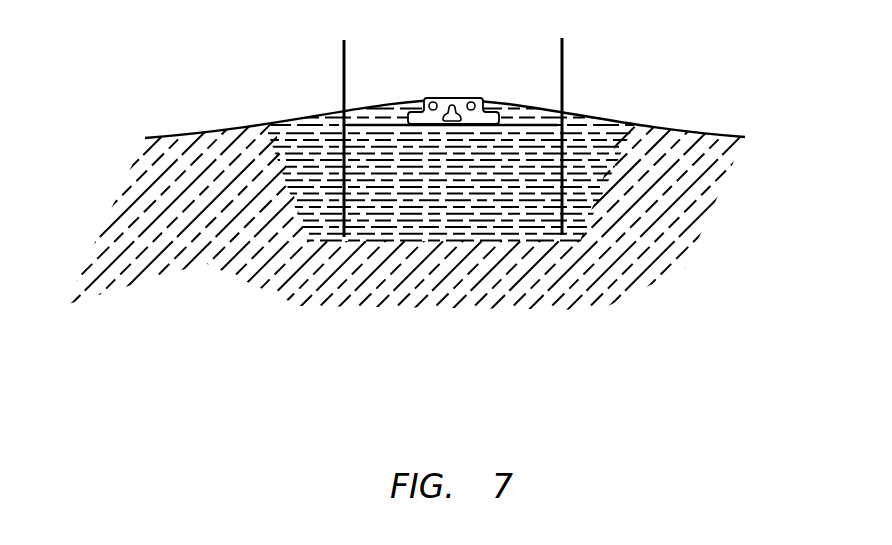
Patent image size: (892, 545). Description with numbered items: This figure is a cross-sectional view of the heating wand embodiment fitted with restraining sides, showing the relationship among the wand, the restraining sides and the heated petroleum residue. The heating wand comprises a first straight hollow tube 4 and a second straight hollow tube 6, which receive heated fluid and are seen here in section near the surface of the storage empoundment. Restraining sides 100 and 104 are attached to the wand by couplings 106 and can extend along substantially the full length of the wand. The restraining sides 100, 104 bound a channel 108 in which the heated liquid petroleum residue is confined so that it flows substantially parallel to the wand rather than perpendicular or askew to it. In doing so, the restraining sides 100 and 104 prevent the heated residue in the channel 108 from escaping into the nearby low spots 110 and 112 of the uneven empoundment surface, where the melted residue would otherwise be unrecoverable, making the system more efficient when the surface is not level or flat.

The restraining side 100 is at (563, 44).
The restraining side 104 is at (343, 46).
The couplings 106 is at (457, 97).
The first straight hollow tube 4 is at (426, 98).
The second straight hollow tube 6 is at (479, 98).
The channel 108 is at (447, 175).
The low spot 110 is at (227, 132).
The low spot 112 is at (705, 137).